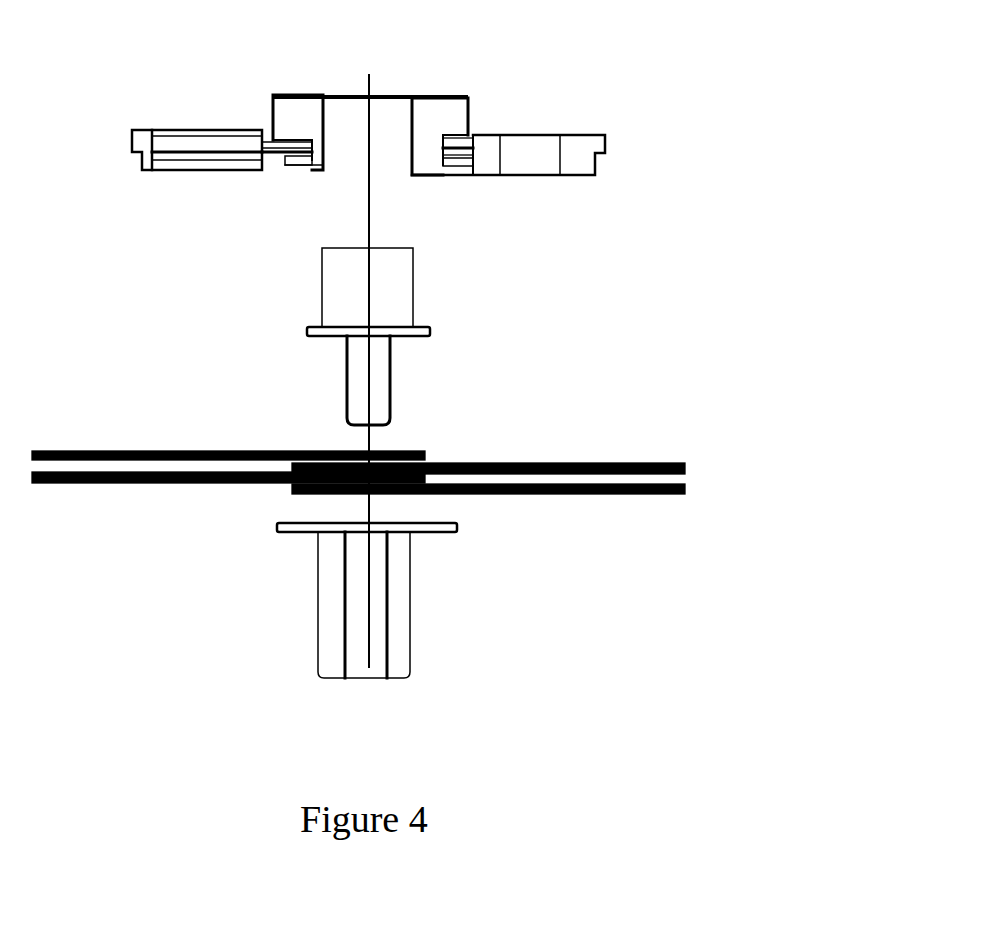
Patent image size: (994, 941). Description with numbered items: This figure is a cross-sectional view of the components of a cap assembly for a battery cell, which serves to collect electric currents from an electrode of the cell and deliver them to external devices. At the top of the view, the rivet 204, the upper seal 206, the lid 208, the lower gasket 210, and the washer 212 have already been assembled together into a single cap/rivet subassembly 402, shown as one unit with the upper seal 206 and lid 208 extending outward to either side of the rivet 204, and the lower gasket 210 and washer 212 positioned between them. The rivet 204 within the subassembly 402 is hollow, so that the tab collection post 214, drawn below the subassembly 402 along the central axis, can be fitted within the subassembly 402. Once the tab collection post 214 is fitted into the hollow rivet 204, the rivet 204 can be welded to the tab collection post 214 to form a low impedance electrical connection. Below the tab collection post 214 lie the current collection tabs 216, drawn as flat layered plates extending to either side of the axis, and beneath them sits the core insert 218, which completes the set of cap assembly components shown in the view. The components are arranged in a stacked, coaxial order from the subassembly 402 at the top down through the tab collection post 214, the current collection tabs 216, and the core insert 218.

The rivet 204 is at (475, 88).
The upper seal 206 is at (261, 122).
The lid 208 is at (605, 124).
The lower gasket 210 is at (262, 168).
The washer 212 is at (275, 172).
The tab collection post 214 is at (462, 322).
The current collection tabs 216 is at (732, 475).
The core insert 218 is at (492, 527).
The cap/rivet subassembly 402 is at (640, 150).